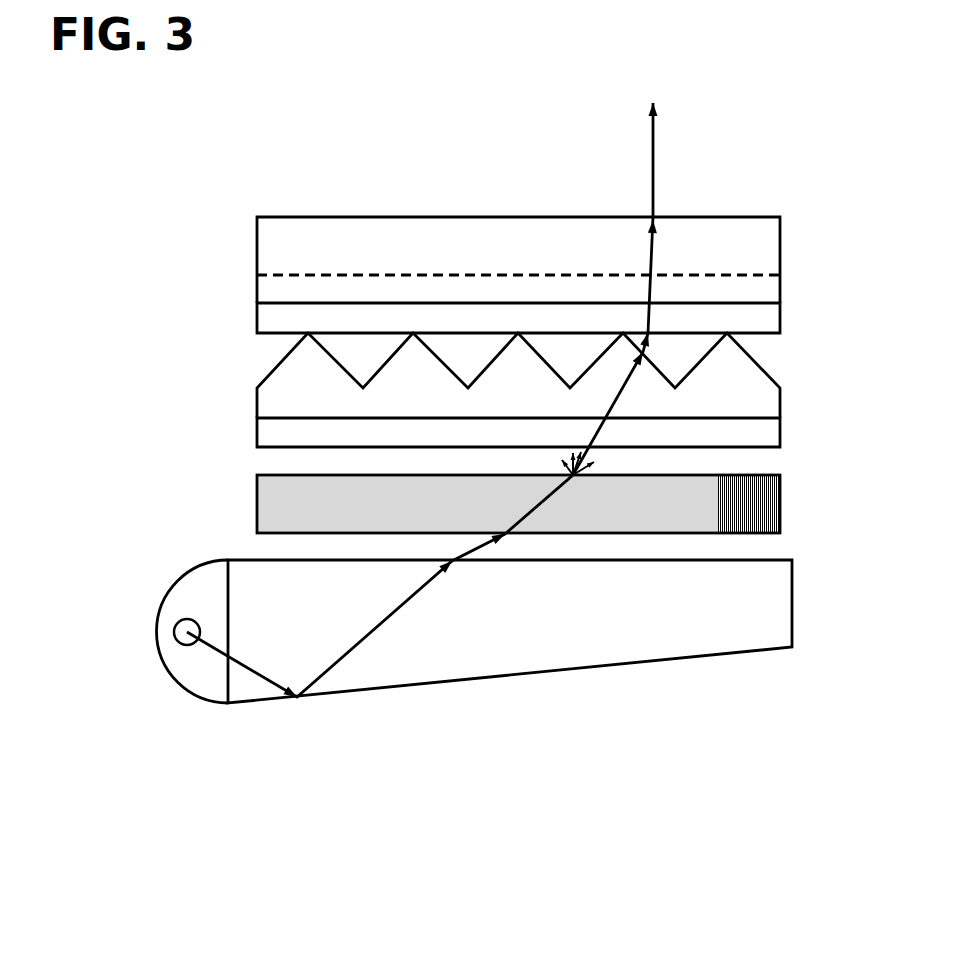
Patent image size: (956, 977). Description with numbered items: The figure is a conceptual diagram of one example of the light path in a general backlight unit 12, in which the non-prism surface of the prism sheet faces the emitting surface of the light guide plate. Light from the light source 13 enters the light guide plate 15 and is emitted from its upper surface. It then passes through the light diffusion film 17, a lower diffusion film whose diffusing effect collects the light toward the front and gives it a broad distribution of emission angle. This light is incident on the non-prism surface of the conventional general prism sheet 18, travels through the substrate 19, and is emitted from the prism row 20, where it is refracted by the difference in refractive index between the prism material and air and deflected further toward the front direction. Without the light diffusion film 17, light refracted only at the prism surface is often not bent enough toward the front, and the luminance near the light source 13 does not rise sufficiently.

The backlight unit 12 is at (112, 702).
The light source 13 is at (186, 635).
The light guide plate 15 is at (703, 608).
The light diffusion film 17 is at (282, 507).
The conventional general prism sheet 18 is at (808, 447).
The substrate 19 is at (282, 313).
The prism row 20 is at (280, 265).